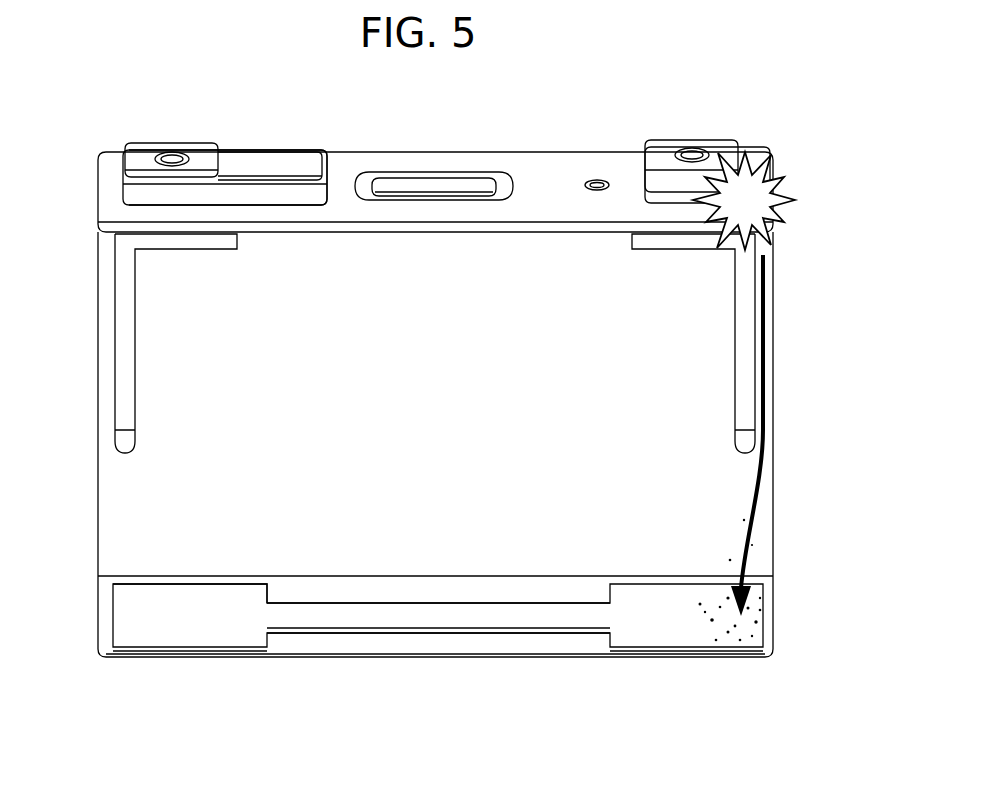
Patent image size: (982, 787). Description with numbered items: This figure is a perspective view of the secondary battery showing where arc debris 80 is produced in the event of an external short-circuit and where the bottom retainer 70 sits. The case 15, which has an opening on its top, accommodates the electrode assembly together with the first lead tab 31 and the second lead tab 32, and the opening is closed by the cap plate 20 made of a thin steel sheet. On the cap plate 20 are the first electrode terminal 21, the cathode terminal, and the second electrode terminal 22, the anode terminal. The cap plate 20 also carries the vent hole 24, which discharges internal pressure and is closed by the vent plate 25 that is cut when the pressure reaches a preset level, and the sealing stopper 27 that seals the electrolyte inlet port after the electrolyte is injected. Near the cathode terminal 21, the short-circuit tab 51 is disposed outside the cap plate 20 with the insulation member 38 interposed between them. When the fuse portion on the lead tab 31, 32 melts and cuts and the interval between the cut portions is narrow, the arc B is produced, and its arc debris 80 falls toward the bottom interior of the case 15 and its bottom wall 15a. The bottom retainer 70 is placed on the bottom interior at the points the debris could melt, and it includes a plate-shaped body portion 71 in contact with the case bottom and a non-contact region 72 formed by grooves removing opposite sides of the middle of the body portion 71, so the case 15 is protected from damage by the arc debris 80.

The case 15 is at (775, 489).
The bottom wall of case 15a is at (524, 647).
The cap plate 20 is at (543, 185).
The first electrode terminal 21 is at (150, 135).
The second electrode terminal 22 is at (727, 133).
The vent hole 24 is at (390, 180).
The vent plate 25 is at (470, 185).
The sealing stopper 27 is at (598, 180).
The first lead tab 31 is at (122, 284).
The second lead tab 32 is at (748, 318).
The insulation member 38 is at (337, 165).
The short-circuit tab 51 is at (263, 160).
The bottom retainer 70 is at (355, 725).
The body portion 71 is at (380, 615).
The non-contact region 72 is at (452, 640).
The arc debris 80 is at (745, 611).
The arc B is at (790, 197).